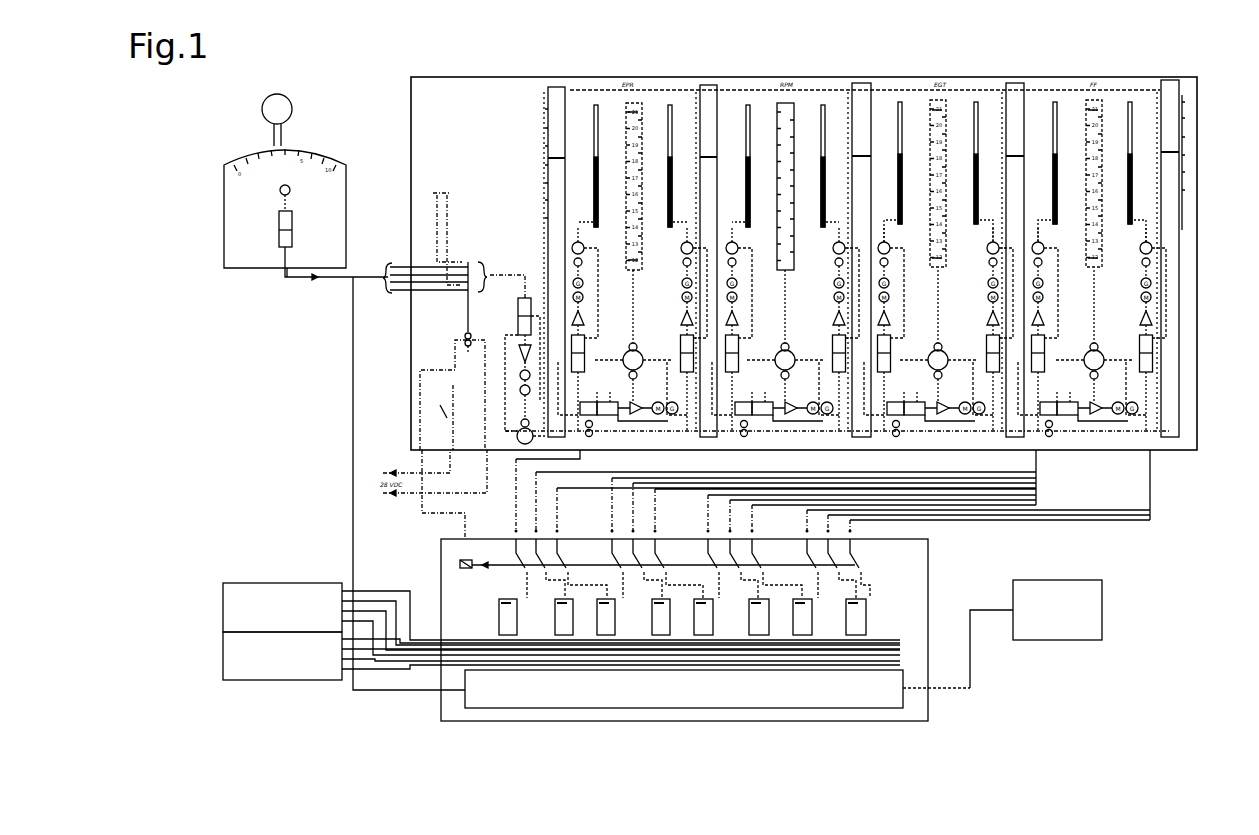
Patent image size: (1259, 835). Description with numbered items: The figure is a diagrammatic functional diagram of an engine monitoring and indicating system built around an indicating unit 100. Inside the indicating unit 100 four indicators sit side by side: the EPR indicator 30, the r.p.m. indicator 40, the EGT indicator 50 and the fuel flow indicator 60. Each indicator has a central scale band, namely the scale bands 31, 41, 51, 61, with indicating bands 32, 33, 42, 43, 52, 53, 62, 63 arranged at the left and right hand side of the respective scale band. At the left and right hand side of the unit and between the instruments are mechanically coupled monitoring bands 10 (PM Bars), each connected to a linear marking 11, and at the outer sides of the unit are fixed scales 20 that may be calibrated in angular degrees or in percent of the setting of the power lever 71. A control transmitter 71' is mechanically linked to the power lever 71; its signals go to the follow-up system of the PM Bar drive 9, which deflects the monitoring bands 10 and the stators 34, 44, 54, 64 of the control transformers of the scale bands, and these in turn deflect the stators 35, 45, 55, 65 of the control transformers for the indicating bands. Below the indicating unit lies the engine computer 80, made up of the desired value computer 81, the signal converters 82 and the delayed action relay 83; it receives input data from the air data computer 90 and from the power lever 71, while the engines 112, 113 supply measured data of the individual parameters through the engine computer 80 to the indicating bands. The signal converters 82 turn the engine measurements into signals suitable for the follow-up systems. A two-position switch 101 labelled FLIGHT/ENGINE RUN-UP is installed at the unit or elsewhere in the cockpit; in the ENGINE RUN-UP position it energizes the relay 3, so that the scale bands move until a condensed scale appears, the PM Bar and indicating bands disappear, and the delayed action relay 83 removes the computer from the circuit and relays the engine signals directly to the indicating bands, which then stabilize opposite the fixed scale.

The indicating unit 100 is at (408, 114).
The power lever 71 is at (284, 85).
The control transmitter 71' is at (237, 224).
The relay 3 is at (462, 340).
The PM Bar drive follow-up system 9 is at (516, 334).
The two-position switch 101 is at (447, 420).
The fixed scale 20 is at (545, 100).
The monitoring band 10 is at (1170, 80).
The linear marking 11 is at (1170, 150).
The EPR indicator 30 is at (643, 117).
The EPR scale band 31 is at (636, 103).
The EPR indicating band 32 is at (597, 110).
The EPR indicating band 33 is at (673, 108).
The EPR scale band control transformer stator 34 is at (592, 413).
The EPR indicating band control transformer stator 35 is at (682, 340).
The r.p.m. indicator 40 is at (797, 117).
The r.p.m. scale band 41 is at (787, 102).
The r.p.m. indicating band 42 is at (750, 108).
The r.p.m. indicating band 43 is at (826, 108).
The r.p.m. scale band control transformer stator 44 is at (747, 413).
The r.p.m. indicating band control transformer stator 45 is at (727, 352).
The EGT indicator 50 is at (950, 117).
The EGT scale band 51 is at (941, 100).
The EGT indicating band 52 is at (902, 105).
The EGT indicating band 53 is at (979, 105).
The EGT scale band control transformer stator 54 is at (902, 413).
The EGT indicating band control transformer stator 55 is at (999, 340).
The fuel flow indicator 60 is at (1104, 117).
The fuel flow scale band 61 is at (1097, 100).
The fuel flow indicating band 62 is at (1058, 105).
The fuel flow indicating band 63 is at (1133, 105).
The fuel flow scale band control transformer stator 64 is at (1057, 410).
The fuel flow indicating band control transformer stator 65 is at (1046, 345).
The engine computer 80 is at (441, 708).
The desired value computer 81 is at (466, 706).
The signal converter 82 is at (872, 757).
The delayed action relay 83 is at (460, 565).
The air data computer 90 is at (1057, 636).
The engine 112 is at (284, 596).
The engine 113 is at (290, 672).